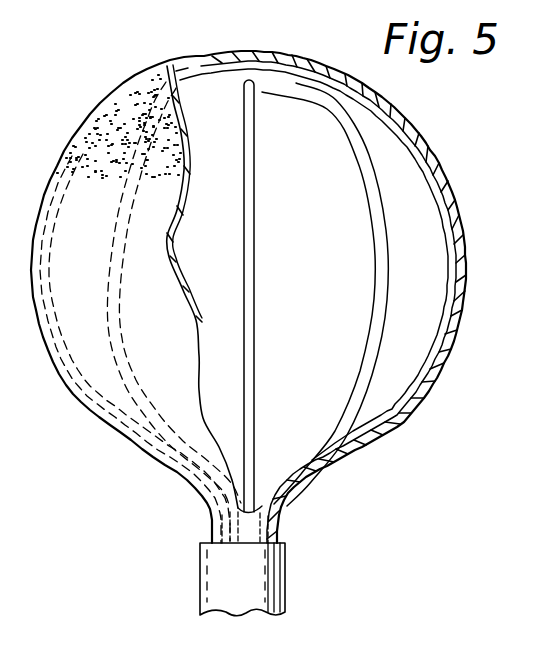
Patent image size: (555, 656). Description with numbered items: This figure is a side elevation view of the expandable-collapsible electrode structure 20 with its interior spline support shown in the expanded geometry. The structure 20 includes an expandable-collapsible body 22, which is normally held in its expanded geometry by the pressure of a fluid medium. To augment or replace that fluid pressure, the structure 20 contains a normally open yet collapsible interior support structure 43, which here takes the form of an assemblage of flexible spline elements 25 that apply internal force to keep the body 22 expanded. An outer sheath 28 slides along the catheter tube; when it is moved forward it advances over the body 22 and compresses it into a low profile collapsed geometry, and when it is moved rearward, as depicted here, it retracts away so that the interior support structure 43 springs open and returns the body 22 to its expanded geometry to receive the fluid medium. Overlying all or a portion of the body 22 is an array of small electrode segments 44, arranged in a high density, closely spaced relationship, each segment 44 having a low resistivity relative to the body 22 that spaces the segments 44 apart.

The expandable-collapsible electrode structure 20 is at (466, 159).
The expandable-collapsible body 22 is at (110, 367).
The flexible spline elements 25 is at (373, 200).
The outer sheath 28 is at (255, 579).
The interior support structure 43 is at (395, 308).
The electrode segments 44 is at (116, 132).